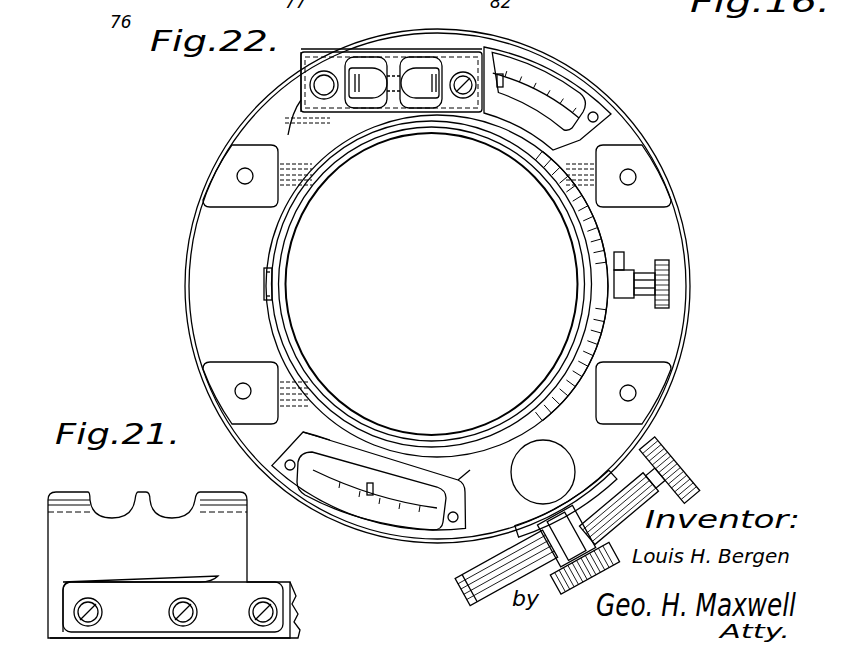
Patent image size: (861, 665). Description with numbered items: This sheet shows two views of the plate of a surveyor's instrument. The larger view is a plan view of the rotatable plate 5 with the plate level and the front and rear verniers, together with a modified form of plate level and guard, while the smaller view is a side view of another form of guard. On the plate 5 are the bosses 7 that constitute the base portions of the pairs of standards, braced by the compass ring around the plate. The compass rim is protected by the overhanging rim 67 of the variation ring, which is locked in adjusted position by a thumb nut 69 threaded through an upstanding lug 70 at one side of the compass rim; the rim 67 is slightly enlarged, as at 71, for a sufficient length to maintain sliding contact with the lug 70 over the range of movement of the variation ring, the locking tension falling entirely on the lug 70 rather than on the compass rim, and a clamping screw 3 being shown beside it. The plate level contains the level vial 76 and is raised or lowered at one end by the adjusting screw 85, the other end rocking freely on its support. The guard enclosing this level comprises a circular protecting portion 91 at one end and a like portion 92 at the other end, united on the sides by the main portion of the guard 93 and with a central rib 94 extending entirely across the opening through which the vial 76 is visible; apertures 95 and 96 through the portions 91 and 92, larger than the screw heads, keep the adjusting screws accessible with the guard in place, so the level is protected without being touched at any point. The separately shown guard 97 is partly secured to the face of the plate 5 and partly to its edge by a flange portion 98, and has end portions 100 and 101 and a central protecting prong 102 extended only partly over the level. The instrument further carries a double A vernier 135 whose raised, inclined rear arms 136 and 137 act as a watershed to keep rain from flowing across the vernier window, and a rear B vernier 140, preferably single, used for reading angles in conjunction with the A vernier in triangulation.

In FIG. 22, the clamping screw 3 is at (596, 290).
In FIG. 22, the rotatable plate 5 is at (350, 581).
In FIG. 22, the boss 7 is at (222, 192).
In FIG. 22, the rim of the variation ring 67 is at (266, 289).
In FIG. 22, the thumb nut 69 is at (666, 268).
In FIG. 22, the upstanding lug 70 is at (622, 274).
In FIG. 22, the enlarged portion of the rim 71 is at (600, 227).
In FIG. 22, the level vial 76 is at (368, 82).
In FIG. 22, the adjusting screw 85 is at (301, 82).
In FIG. 22, the circular protecting portion 91 is at (305, 52).
In FIG. 22, the circular protecting portion 92 is at (444, 62).
In FIG. 22, the main portion of the guard 93 is at (394, 50).
In FIG. 22, the central rib 94 is at (396, 74).
In FIG. 22, the aperture 95 is at (301, 60).
In FIG. 22, the aperture 96 is at (462, 76).
In FIG. 21, the guard 97 is at (169, 565).
In FIG. 21, the flange portion 98 is at (175, 607).
In FIG. 21, the end portion 100 is at (72, 492).
In FIG. 21, the end portion 101 is at (210, 500).
In FIG. 21, the central protecting prong 102 is at (146, 492).
In FIG. 22, the A vernier 135 is at (410, 522).
In FIG. 22, the rear arm 136 is at (443, 470).
In FIG. 22, the rear arm 137 is at (306, 438).
In FIG. 22, the B vernier 140 is at (540, 90).